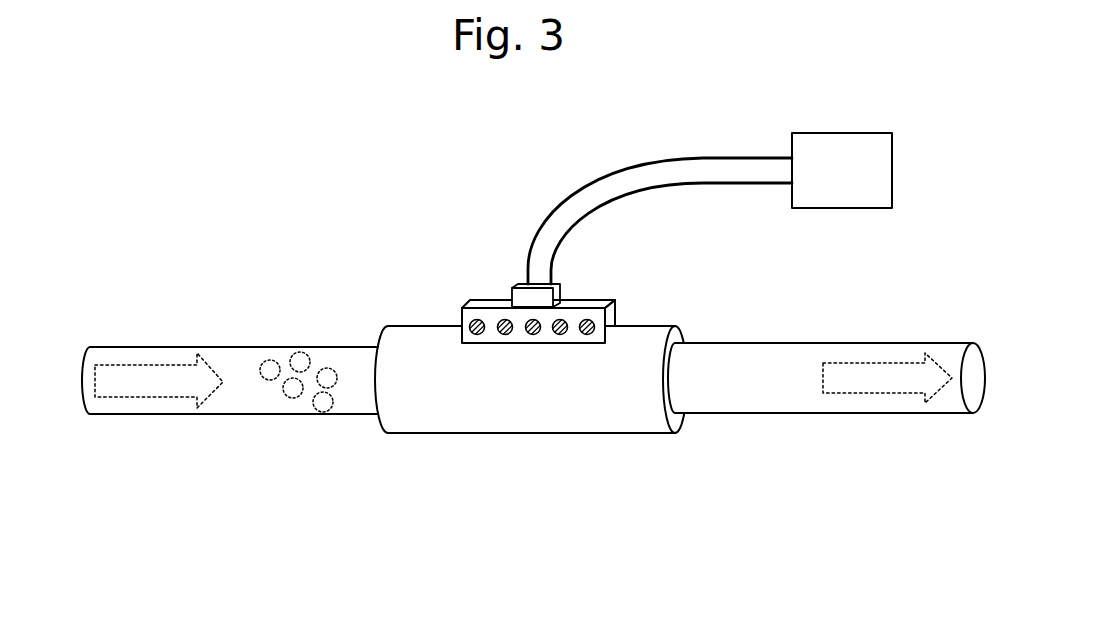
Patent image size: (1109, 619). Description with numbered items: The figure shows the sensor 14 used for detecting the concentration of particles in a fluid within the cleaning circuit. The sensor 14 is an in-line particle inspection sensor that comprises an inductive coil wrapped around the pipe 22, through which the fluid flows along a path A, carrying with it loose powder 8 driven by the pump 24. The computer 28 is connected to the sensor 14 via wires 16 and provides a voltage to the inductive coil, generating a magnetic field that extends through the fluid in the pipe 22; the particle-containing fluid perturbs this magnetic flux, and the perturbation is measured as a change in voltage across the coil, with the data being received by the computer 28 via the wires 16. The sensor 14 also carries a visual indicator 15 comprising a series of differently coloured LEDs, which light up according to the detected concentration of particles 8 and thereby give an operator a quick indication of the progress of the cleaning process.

The loose powder 8 is at (271, 401).
The sensor 14 is at (453, 402).
The visual indicator 15 is at (472, 324).
The wires 16 is at (605, 182).
The pipe 22 is at (733, 403).
The pump 24 is at (167, 322).
The computer 28 is at (841, 133).
The path A is at (880, 382).